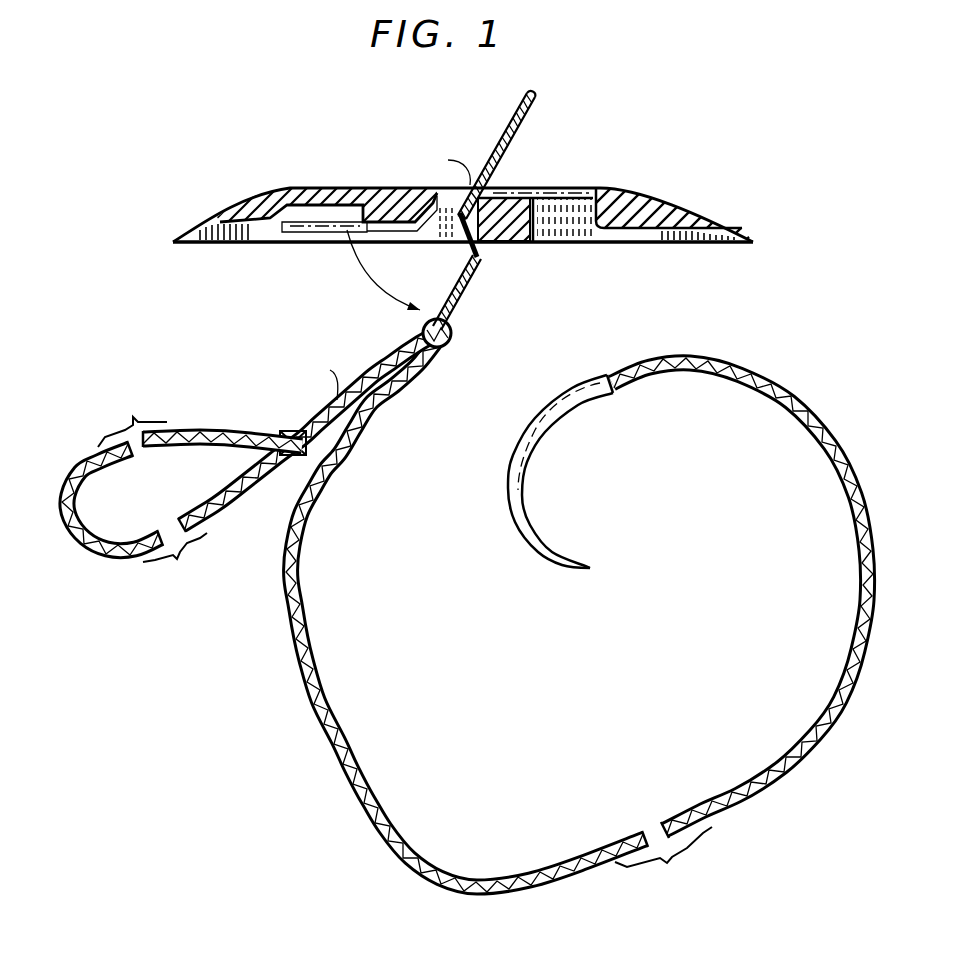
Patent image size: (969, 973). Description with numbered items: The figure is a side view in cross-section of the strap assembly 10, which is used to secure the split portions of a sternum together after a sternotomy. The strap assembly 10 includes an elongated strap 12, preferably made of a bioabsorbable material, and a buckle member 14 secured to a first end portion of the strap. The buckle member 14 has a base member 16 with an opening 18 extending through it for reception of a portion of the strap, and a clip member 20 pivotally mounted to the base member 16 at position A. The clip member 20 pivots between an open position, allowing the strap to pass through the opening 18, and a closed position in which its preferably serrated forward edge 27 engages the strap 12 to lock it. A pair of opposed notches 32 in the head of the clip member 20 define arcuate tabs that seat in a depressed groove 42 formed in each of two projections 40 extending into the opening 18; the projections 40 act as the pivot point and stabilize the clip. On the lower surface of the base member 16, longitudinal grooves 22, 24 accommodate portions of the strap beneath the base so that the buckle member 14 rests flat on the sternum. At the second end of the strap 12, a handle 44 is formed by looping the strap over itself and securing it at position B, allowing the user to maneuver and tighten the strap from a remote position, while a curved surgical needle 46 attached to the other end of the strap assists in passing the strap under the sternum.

The strap assembly 10 is at (190, 603).
The elongated strap 12 is at (579, 613).
The buckle member 14 is at (625, 163).
The base member 16 is at (318, 193).
The opening 18 is at (583, 224).
The clip member 20 is at (500, 134).
The longitudinal groove 22 is at (247, 245).
The longitudinal groove 24 is at (718, 243).
The forward edge 27 is at (541, 87).
The notches 32 is at (633, 196).
The projections 40 is at (507, 243).
The depressed groove 42 is at (497, 190).
The handle 44 is at (87, 473).
The surgical needle 46 is at (538, 435).